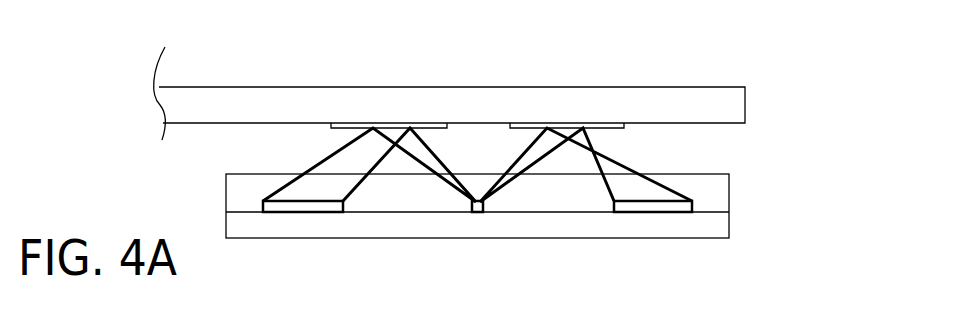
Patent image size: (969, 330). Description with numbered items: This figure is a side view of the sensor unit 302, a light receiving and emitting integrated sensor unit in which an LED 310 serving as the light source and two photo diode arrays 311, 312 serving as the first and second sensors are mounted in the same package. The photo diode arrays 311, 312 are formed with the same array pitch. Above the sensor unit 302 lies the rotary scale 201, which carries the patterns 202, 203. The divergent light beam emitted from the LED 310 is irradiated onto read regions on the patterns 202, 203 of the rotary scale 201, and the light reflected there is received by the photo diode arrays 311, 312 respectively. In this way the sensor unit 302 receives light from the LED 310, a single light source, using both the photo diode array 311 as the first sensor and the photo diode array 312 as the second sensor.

The rotary scale 201 is at (697, 87).
The pattern 202 is at (604, 128).
The pattern 203 is at (350, 128).
The sensor unit 302 is at (729, 197).
The LED 310 is at (483, 209).
The photo diode array 311 is at (667, 212).
The photo diode array 312 is at (292, 212).